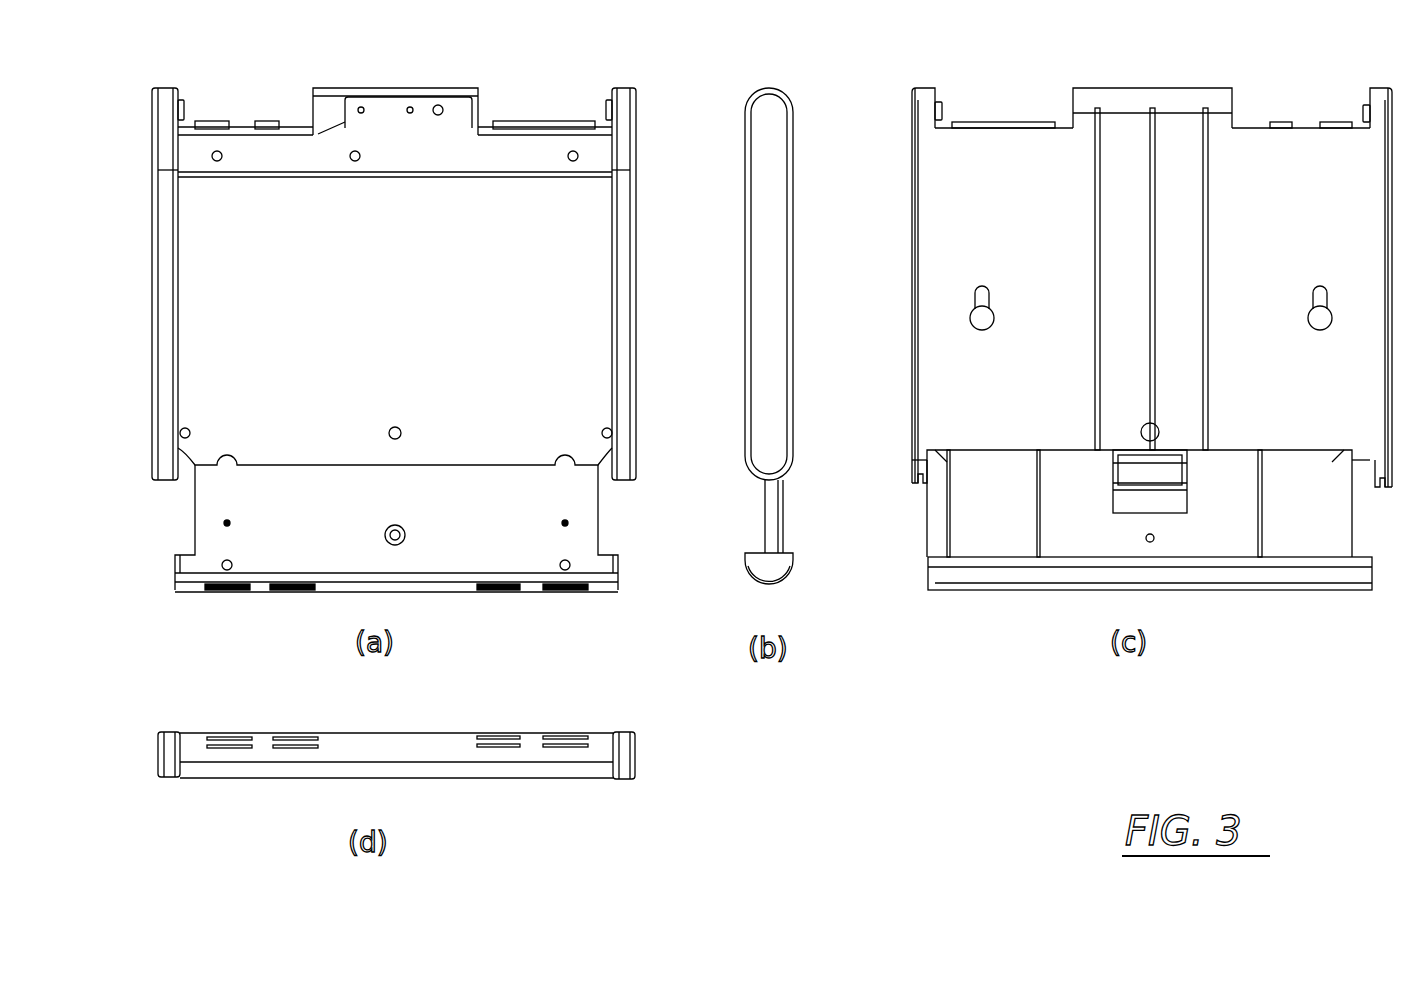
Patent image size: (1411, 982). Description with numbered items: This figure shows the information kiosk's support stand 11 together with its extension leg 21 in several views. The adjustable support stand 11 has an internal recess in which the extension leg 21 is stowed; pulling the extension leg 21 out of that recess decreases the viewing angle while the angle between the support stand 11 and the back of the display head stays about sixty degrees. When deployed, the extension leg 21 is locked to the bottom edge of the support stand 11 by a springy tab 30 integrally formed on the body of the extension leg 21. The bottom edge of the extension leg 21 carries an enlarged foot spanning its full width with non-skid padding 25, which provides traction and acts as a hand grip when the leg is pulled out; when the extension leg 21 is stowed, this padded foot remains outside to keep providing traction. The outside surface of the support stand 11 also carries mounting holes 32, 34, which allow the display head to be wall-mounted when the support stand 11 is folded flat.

The support stand 11 is at (780, 400).
The extension leg 21 is at (965, 510).
The non-skid padding 25 is at (752, 584).
The springy tab 30 is at (1170, 478).
The mounting hole 32 is at (1313, 272).
The mounting hole 34 is at (974, 304).